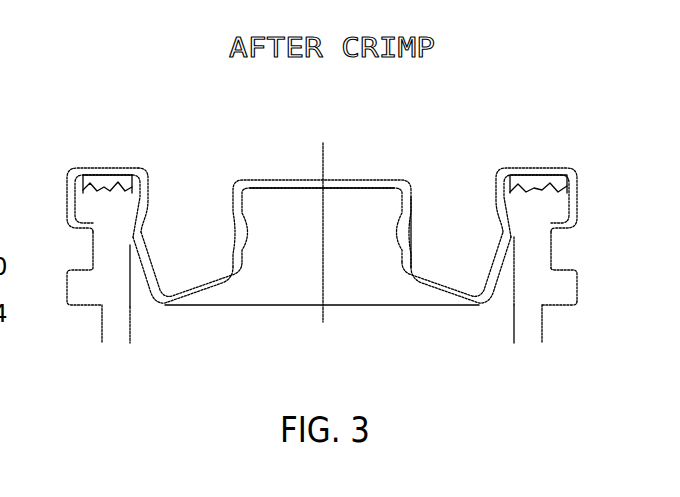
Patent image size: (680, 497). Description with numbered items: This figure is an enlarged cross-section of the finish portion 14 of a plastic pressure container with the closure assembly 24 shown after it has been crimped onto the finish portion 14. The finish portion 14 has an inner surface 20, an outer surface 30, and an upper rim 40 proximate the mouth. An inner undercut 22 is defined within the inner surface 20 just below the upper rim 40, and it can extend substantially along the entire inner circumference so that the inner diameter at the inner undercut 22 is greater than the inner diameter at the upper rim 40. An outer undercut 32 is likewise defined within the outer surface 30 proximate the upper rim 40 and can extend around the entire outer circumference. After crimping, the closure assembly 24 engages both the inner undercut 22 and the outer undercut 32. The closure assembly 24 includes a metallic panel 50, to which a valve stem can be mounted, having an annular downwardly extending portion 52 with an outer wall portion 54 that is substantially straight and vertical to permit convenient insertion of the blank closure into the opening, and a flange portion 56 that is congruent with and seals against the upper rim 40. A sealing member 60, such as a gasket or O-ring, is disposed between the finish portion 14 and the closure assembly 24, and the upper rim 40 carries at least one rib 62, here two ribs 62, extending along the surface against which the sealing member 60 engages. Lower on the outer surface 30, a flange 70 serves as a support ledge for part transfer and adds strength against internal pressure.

The finish portion 14 is at (537, 327).
The inner surface 20 is at (508, 332).
The inner undercut 22 is at (505, 228).
The closure assembly 24 is at (267, 267).
The outer surface 30 is at (547, 333).
The outer undercut 32 is at (555, 230).
The upper rim 40 is at (518, 192).
The metallic panel 50 is at (260, 183).
The annular downwardly extending portion 52 is at (187, 288).
The outer wall portion 54 is at (148, 193).
The flange portion 56 is at (80, 176).
The sealing member 60 is at (558, 187).
The rib 62 is at (125, 180).
The flange 70 is at (565, 287).